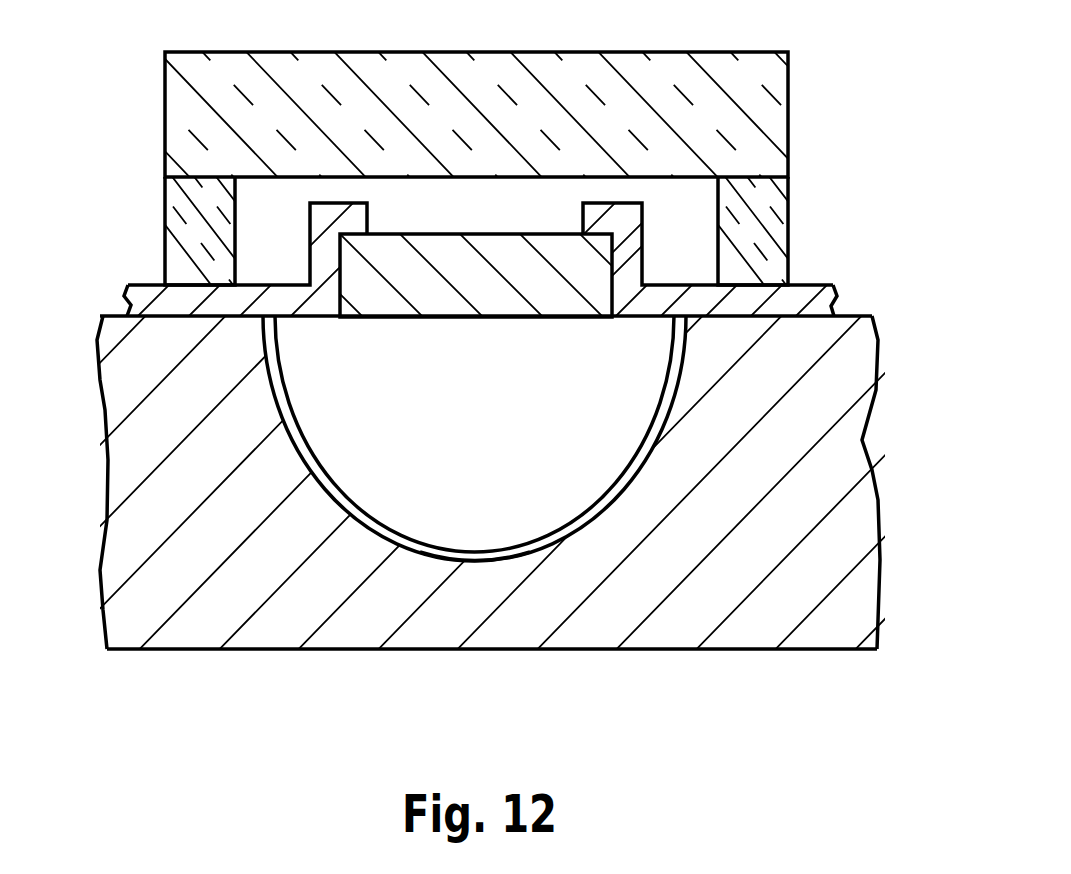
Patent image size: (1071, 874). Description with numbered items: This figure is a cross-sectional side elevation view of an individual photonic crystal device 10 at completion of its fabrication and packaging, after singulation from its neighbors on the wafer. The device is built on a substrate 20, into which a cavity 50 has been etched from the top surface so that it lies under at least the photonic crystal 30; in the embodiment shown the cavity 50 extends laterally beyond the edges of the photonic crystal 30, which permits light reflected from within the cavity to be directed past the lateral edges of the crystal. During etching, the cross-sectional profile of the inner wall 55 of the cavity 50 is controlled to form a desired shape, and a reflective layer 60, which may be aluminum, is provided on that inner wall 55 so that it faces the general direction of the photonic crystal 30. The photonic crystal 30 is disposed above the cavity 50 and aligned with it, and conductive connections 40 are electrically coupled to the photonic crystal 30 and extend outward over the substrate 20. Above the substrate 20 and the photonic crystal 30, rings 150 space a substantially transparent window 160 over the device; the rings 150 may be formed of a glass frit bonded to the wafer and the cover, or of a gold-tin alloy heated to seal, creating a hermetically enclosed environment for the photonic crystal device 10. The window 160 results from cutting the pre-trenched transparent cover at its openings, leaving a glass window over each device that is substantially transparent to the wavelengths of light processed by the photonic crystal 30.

The photonic crystal device 10 is at (856, 120).
The substrate 20 is at (150, 518).
The photonic crystal 30 is at (523, 296).
The conductive connections 40 is at (148, 285).
The cavity 50 is at (500, 463).
The inner wall 55 is at (473, 562).
The reflective layer 60 is at (297, 406).
The rings 150 is at (177, 210).
The transparent window 160 is at (500, 133).